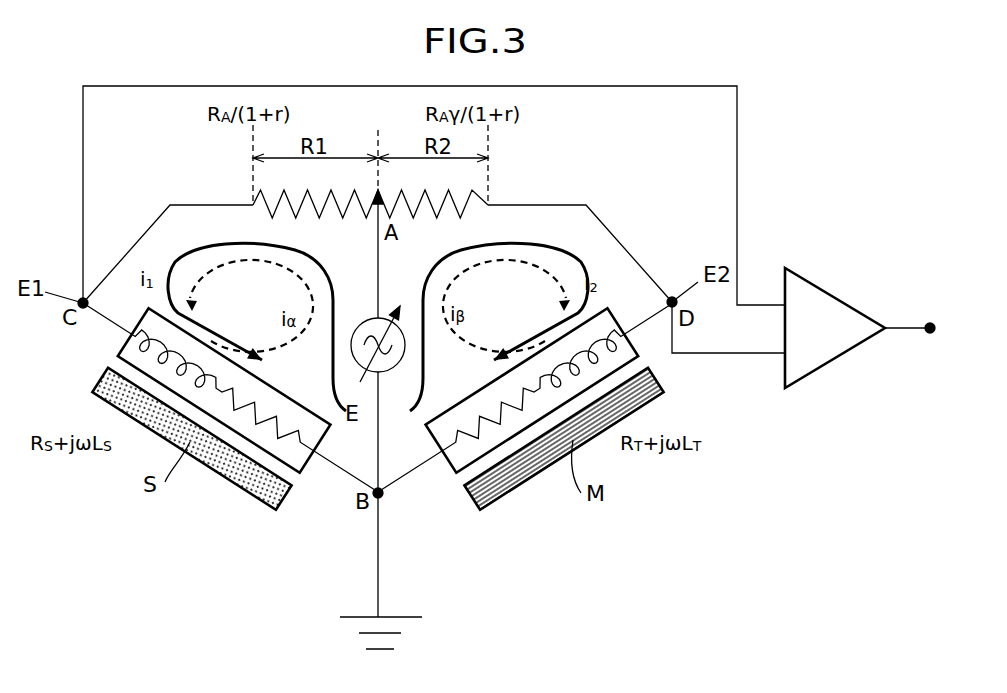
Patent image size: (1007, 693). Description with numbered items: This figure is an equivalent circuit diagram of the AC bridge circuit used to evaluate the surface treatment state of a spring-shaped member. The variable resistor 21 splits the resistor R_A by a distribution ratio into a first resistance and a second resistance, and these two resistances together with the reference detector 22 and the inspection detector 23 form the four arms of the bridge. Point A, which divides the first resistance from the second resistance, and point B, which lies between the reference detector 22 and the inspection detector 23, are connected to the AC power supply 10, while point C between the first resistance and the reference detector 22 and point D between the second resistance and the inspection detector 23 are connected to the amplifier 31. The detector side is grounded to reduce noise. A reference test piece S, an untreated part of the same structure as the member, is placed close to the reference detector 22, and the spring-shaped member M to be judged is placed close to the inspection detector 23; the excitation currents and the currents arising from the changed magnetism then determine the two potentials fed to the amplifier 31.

The AC power supply 10 is at (392, 374).
The variable resistor 21 is at (466, 192).
The reference detector 22 is at (120, 349).
The inspection detector 23 is at (642, 348).
The amplifier 31 is at (822, 370).